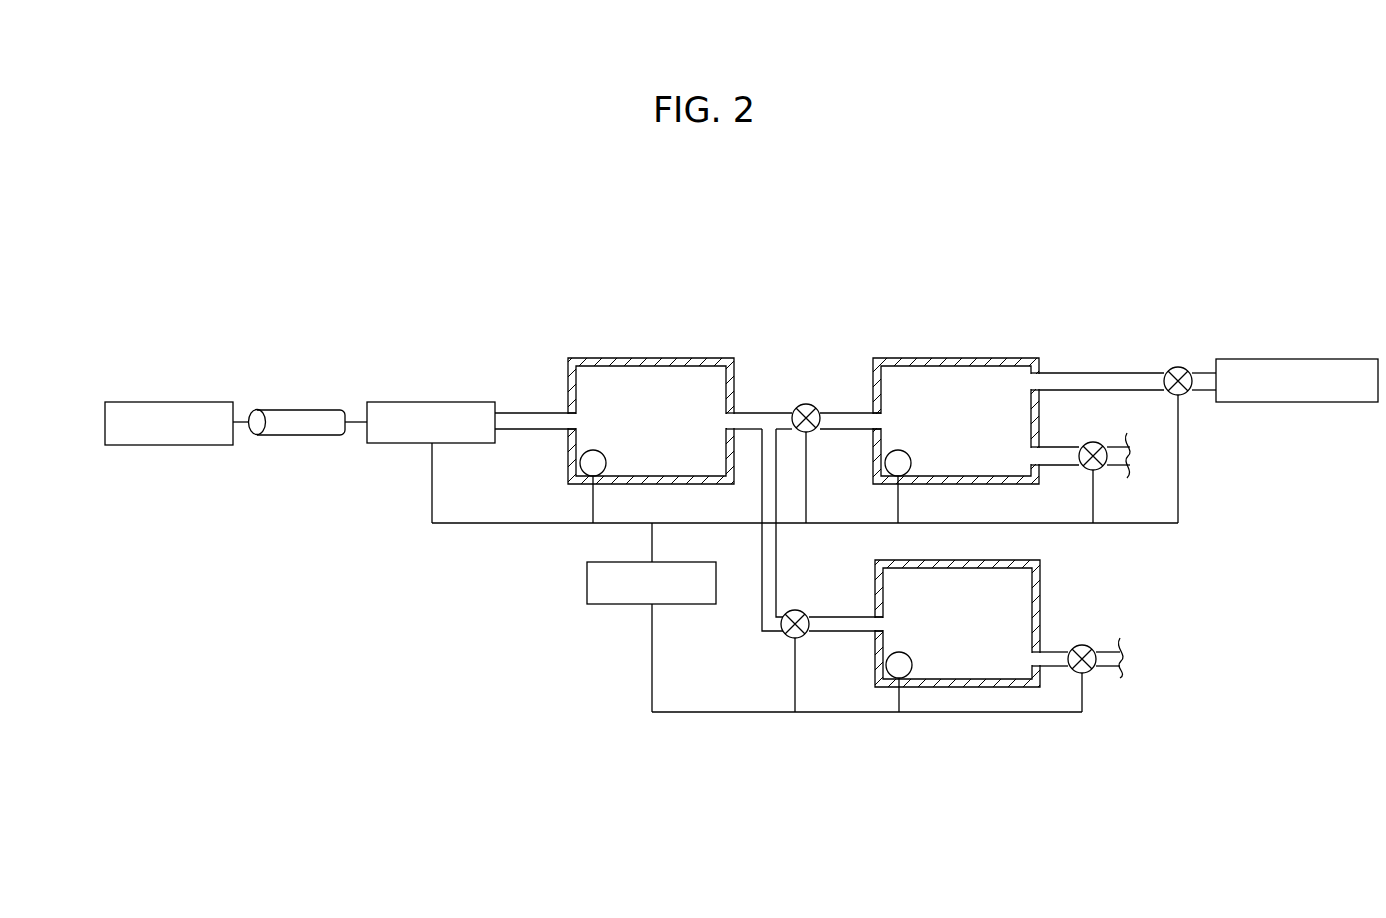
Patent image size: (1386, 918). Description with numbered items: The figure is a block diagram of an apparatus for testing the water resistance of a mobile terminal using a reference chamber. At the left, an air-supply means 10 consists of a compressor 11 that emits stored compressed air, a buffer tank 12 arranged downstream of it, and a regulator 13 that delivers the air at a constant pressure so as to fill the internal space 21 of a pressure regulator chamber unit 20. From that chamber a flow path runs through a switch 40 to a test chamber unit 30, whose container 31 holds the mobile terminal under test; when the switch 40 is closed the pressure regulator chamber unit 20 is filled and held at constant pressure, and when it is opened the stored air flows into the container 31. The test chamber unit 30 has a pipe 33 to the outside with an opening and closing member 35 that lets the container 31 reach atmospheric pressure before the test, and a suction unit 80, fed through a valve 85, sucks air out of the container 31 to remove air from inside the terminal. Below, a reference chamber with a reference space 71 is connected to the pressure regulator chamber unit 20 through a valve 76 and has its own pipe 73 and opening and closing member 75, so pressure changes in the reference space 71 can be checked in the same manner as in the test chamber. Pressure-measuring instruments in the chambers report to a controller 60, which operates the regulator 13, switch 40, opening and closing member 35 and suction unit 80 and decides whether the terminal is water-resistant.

The air-supply means 10 is at (300, 402).
The compressor 11 is at (168, 402).
The buffer tank 12 is at (300, 418).
The regulator 13 is at (388, 445).
The pressure regulator chamber unit 20 is at (683, 373).
The internal space 21 is at (711, 381).
The test chamber unit 30 is at (962, 373).
The container 31 is at (1006, 379).
The pipe 33 is at (1040, 453).
The opening and closing member 35 is at (1102, 468).
The switch 40 is at (806, 404).
The controller 60 is at (587, 585).
The reference space 71 is at (1010, 594).
The pipe 73 is at (1050, 655).
The opening and closing member 75 is at (1088, 673).
The valve 76 is at (790, 610).
The suction unit 80 is at (1262, 402).
The valve 85 is at (1183, 396).